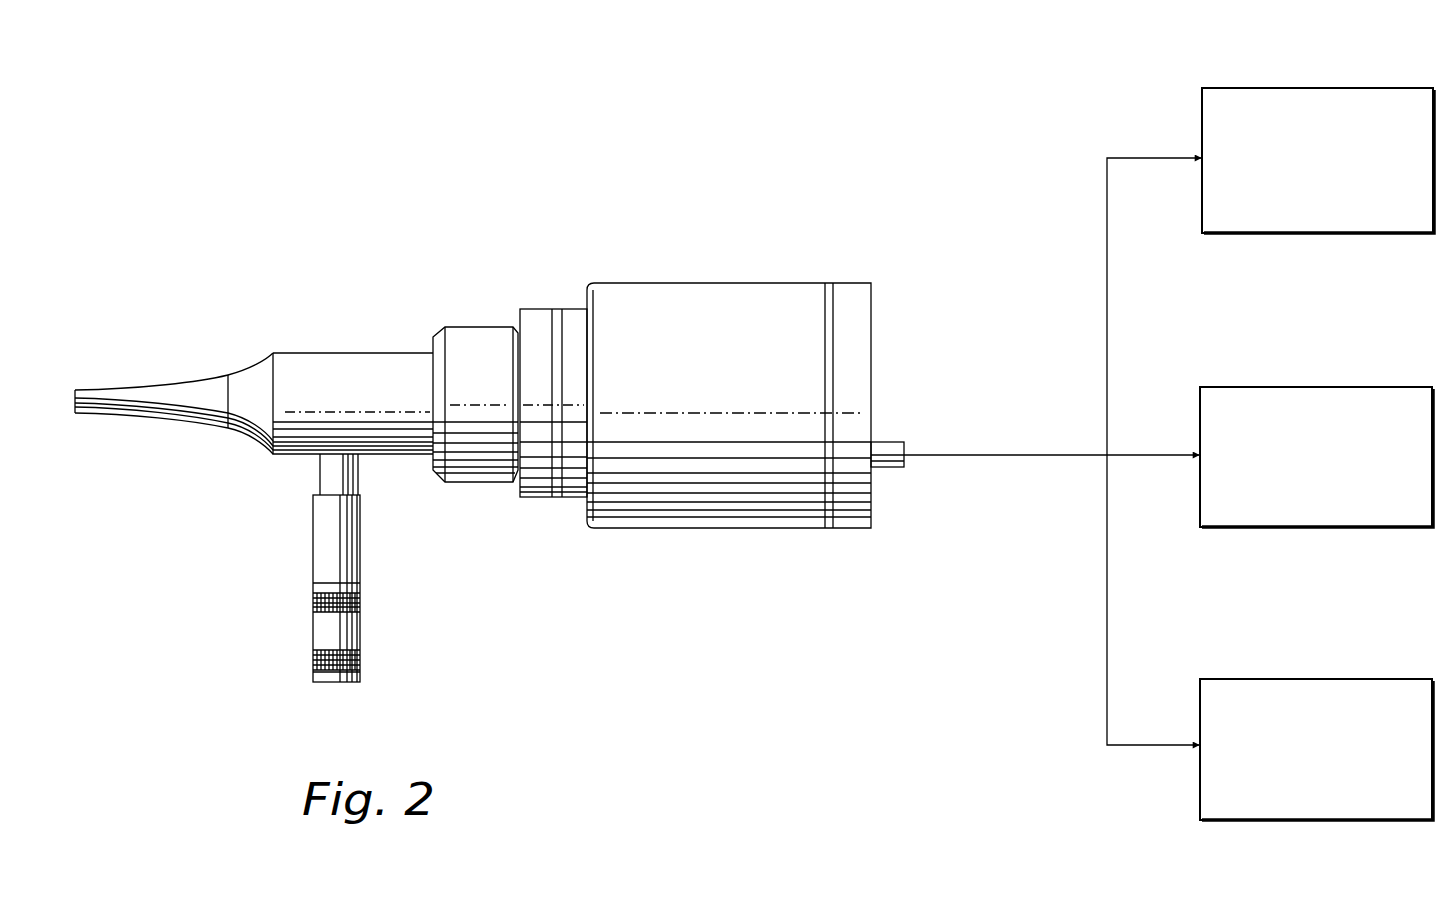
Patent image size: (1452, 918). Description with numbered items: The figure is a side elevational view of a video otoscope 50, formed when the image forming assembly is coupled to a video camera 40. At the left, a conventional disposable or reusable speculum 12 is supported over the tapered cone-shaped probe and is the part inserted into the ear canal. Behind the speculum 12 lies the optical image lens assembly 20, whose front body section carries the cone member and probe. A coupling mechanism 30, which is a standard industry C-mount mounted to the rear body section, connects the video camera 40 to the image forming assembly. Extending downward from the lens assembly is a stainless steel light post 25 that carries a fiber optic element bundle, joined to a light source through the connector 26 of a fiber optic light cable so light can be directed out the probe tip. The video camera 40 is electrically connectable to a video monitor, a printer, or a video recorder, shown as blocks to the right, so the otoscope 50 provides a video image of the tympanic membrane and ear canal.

The speculum 12 is at (250, 365).
The optical image lens assembly 20 is at (348, 352).
The light post 25 is at (320, 474).
The connector 26 is at (363, 602).
The coupling mechanism 30 is at (478, 326).
The video camera 40 is at (735, 282).
The video otoscope 50 is at (602, 168).